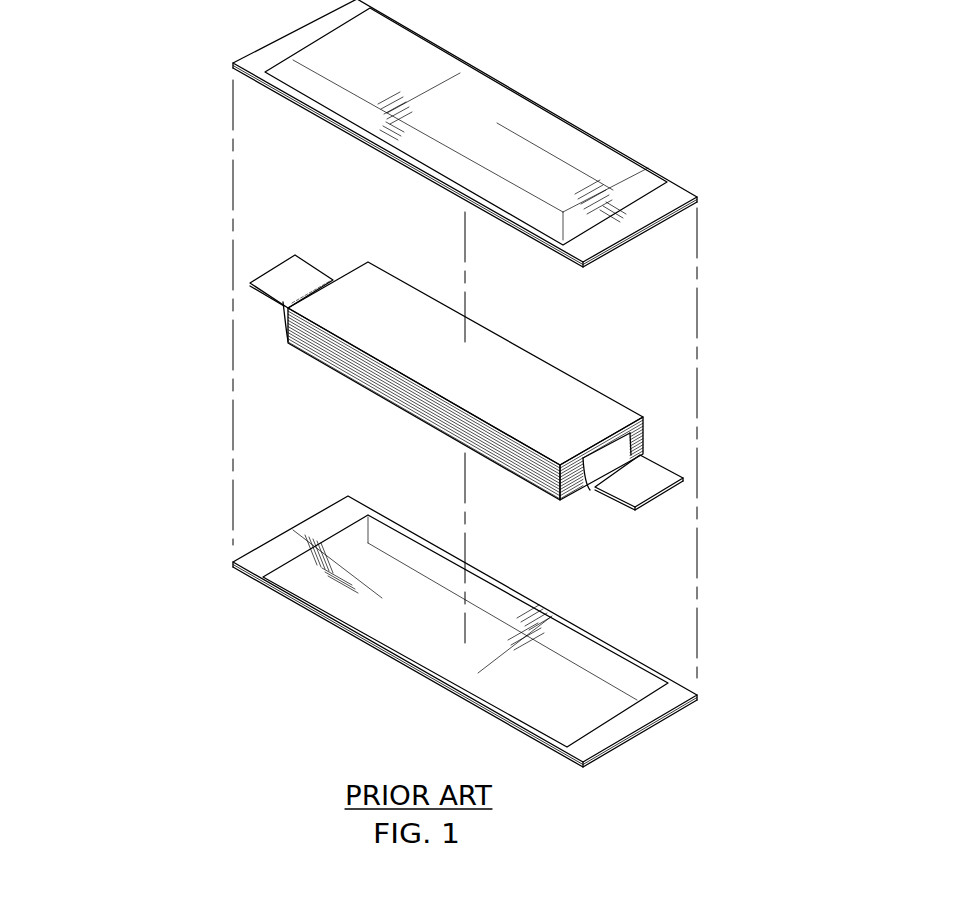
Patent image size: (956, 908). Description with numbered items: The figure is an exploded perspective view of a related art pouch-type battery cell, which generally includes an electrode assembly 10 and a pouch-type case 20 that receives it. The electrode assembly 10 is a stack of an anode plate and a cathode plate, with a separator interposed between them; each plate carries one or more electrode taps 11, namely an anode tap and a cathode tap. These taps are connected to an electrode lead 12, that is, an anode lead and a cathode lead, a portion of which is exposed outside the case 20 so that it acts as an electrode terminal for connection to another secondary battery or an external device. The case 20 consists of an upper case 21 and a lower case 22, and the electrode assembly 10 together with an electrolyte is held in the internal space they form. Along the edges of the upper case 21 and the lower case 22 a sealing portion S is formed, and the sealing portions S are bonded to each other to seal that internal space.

The electrode assembly 10 is at (598, 392).
The electrode tap 11 is at (625, 445).
The electrode lead 12 is at (300, 272).
The pouch-type case 20 is at (158, 235).
The upper case 21 is at (283, 80).
The lower case 22 is at (267, 560).
The sealing portion S is at (677, 193).